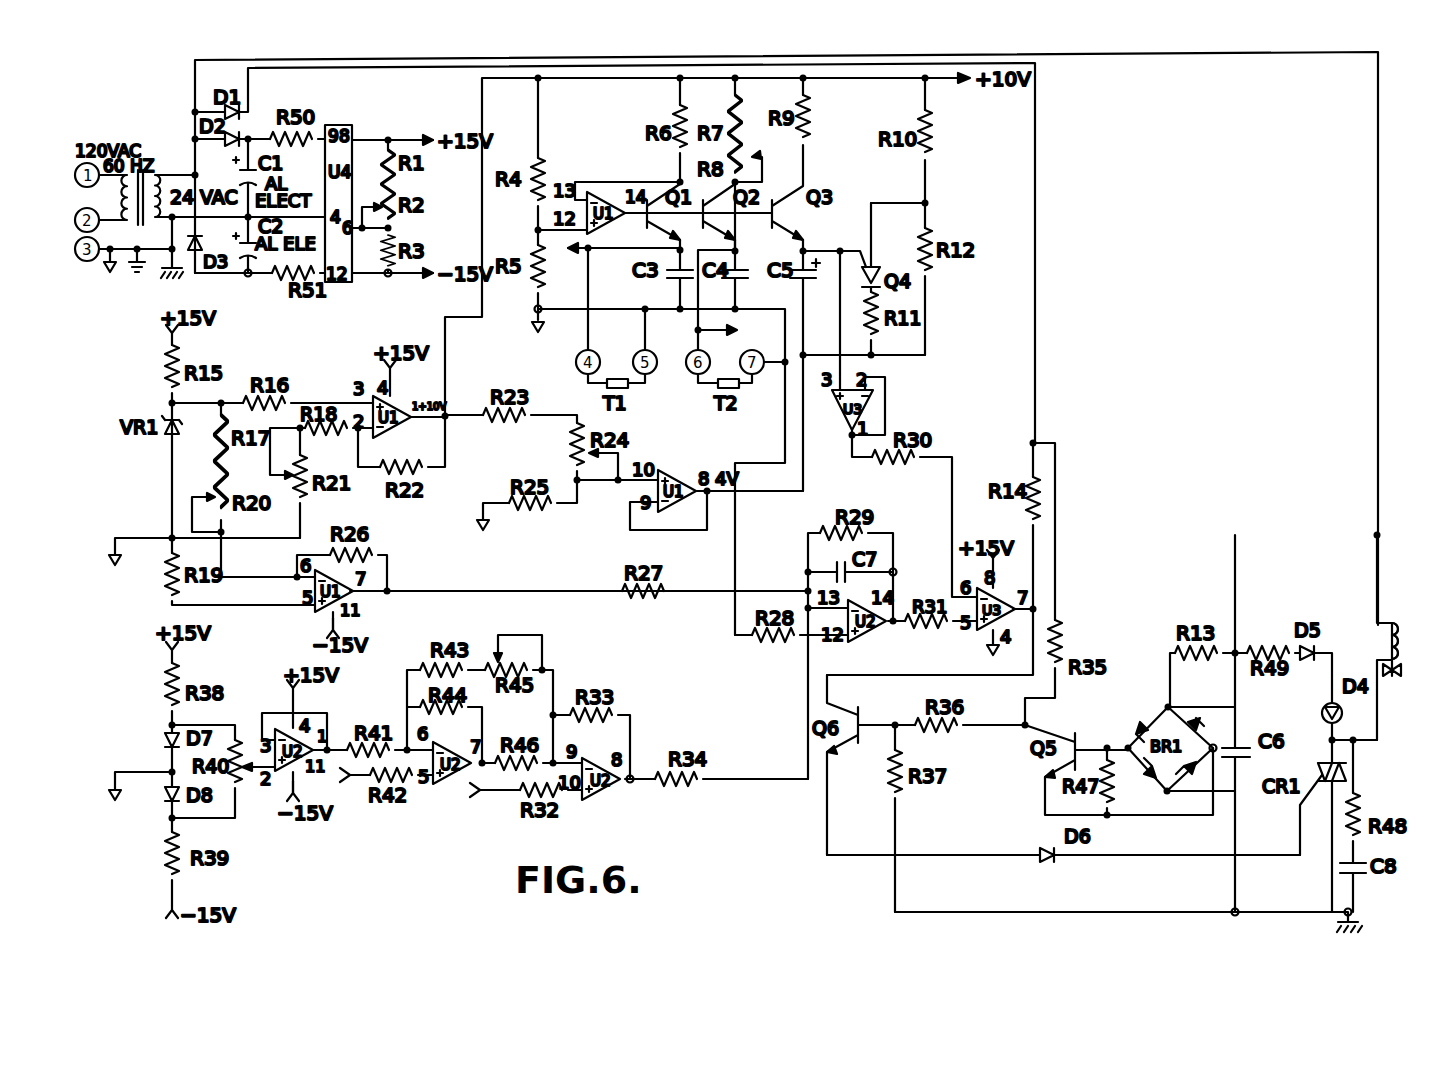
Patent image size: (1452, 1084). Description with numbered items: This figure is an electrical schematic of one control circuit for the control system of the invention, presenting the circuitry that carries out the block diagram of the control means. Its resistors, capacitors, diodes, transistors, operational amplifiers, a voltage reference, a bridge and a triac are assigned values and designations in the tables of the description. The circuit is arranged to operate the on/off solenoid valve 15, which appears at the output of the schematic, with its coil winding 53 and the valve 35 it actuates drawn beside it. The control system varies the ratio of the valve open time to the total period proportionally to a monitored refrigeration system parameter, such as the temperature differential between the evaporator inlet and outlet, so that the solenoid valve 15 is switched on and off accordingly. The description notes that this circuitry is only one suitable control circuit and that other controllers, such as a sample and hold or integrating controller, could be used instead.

The on/off solenoid valve 15 is at (1382, 614).
The solenoid coil winding 53 is at (1411, 642).
The valve 35 is at (1396, 680).